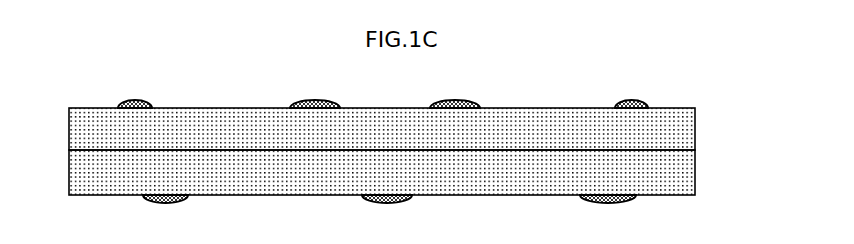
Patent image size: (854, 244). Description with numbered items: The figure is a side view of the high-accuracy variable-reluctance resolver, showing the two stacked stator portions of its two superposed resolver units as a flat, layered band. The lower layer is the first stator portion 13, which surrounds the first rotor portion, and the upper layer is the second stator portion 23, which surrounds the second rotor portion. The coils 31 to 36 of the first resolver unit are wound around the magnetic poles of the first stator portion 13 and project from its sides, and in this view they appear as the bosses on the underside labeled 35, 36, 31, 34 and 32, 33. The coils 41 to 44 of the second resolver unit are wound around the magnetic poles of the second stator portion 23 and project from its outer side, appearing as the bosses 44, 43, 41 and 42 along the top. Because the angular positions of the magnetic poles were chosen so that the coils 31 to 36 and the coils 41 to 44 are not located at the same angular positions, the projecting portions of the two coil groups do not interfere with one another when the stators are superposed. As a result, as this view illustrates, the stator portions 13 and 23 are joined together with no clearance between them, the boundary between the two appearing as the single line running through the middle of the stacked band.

The first stator portion 13 is at (695, 188).
The second stator portion 23 is at (695, 138).
The coil 31 is at (425, 212).
The coil 32 is at (640, 211).
The coil 33 is at (700, 227).
The coil 34 is at (488, 228).
The coil 35 is at (201, 211).
The coil 36 is at (260, 227).
The coil 41 is at (523, 88).
The coil 42 is at (635, 99).
The coil 43 is at (380, 88).
The coil 44 is at (145, 101).